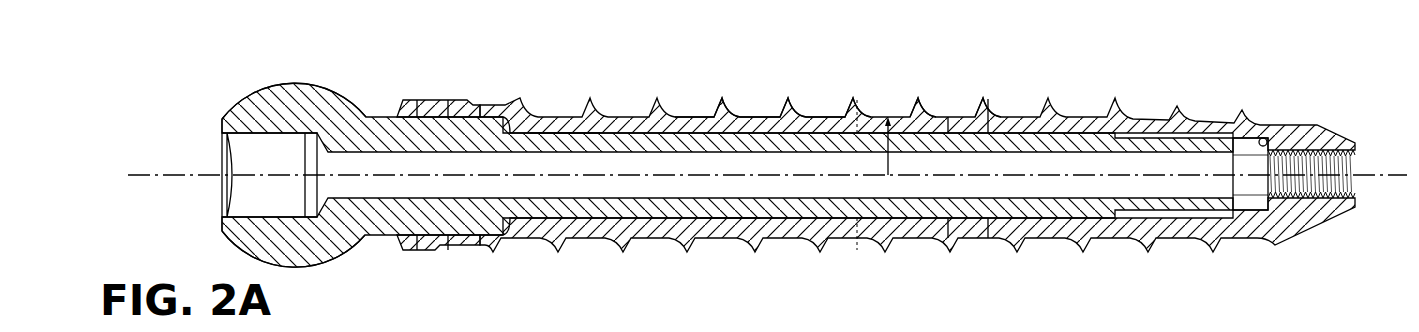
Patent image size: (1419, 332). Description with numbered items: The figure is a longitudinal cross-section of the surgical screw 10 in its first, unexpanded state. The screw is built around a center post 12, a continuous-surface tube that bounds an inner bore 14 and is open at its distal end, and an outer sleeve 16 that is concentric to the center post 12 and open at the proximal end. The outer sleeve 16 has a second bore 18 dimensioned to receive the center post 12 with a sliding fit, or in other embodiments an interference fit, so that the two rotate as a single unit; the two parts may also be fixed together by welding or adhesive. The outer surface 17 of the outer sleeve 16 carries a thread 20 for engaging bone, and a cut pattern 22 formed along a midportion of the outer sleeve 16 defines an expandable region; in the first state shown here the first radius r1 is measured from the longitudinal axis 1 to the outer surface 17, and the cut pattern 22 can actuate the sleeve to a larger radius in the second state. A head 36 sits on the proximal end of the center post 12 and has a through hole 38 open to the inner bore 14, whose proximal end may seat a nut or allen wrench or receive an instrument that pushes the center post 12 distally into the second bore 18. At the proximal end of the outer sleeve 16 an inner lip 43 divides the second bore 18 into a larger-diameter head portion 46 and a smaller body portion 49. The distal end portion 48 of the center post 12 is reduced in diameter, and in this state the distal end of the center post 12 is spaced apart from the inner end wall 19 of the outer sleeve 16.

The longitudinal axis 1 is at (1380, 165).
The surgical screw 10 is at (1258, 72).
The center post 12 is at (320, 72).
The inner bore 14 is at (582, 160).
The outer sleeve 16 is at (760, 120).
The outer surface 17 is at (695, 112).
The second bore 18 is at (808, 130).
The inner end wall 19 is at (1266, 138).
The thread 20 is at (919, 99).
The cut pattern 22 is at (990, 72).
The head 36 is at (297, 82).
The through hole 38 is at (247, 153).
The inner lip 43 is at (510, 104).
The head portion 46 is at (447, 98).
The end portion 48 is at (565, 133).
The body portion 49 is at (729, 220).
The first radius r1 is at (888, 160).